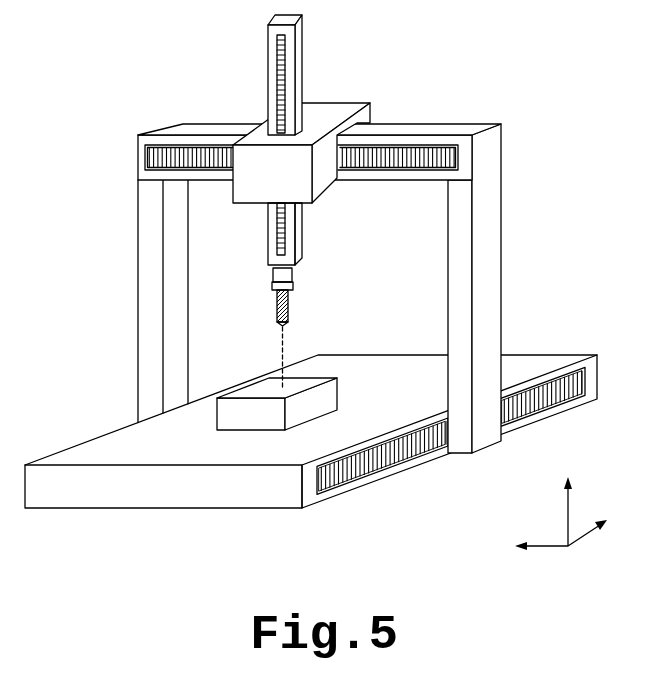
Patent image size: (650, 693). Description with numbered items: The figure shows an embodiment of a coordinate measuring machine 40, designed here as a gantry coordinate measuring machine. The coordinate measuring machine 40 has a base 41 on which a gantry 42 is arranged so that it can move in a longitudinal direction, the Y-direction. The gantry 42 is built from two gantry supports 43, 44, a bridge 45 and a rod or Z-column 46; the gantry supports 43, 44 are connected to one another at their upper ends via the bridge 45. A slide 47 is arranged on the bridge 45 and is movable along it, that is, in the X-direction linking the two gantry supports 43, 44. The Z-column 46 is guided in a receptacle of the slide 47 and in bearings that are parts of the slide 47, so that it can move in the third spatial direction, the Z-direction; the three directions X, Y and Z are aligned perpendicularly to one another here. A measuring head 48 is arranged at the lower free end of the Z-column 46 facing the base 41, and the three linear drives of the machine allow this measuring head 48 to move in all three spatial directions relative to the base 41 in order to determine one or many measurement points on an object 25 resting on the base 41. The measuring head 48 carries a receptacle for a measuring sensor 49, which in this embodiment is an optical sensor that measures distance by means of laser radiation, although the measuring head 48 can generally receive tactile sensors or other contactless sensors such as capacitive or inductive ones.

The coordinate measuring machine 40 is at (520, 40).
The base 41 is at (88, 452).
The gantry 42 is at (397, 95).
The gantry support 43 is at (488, 213).
The gantry support 44 is at (153, 245).
The bridge 45 is at (200, 128).
The Z-column 46 is at (272, 62).
The slide 47 is at (327, 110).
The measuring head 48 is at (280, 275).
The measuring sensor 49 is at (290, 315).
The object 25 is at (273, 392).